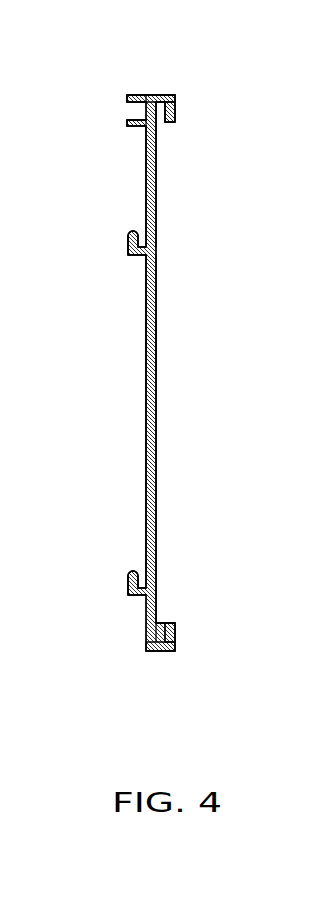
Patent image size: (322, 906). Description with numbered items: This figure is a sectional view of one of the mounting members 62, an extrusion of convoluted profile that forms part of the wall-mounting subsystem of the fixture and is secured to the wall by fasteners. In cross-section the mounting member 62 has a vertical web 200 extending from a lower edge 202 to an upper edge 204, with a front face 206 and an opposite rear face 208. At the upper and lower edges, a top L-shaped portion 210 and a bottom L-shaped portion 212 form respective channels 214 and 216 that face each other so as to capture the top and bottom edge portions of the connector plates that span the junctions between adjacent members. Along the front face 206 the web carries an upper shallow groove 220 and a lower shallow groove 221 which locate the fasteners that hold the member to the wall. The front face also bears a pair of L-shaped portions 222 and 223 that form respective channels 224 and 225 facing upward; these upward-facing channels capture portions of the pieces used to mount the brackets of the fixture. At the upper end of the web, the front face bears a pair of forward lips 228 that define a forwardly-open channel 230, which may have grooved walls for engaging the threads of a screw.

The mounting member 62 is at (120, 674).
The vertical web 200 is at (148, 388).
The lower edge 202 is at (153, 660).
The upper edge 204 is at (153, 93).
The front face 206 is at (145, 331).
The rear face 208 is at (157, 342).
The top L-shaped portion 210 is at (184, 105).
The bottom L-shaped portion 212 is at (184, 638).
The top channel 214 is at (160, 126).
The bottom channel 216 is at (165, 621).
The upper shallow groove 220 is at (143, 176).
The lower shallow groove 221 is at (143, 480).
The upper L-shaped portion 222 is at (126, 249).
The lower L-shaped portion 223 is at (121, 593).
The upper channel 224 is at (135, 228).
The lower channel 225 is at (135, 566).
The forward lips 228 is at (123, 96).
The forwardly-open channel 230 is at (131, 110).